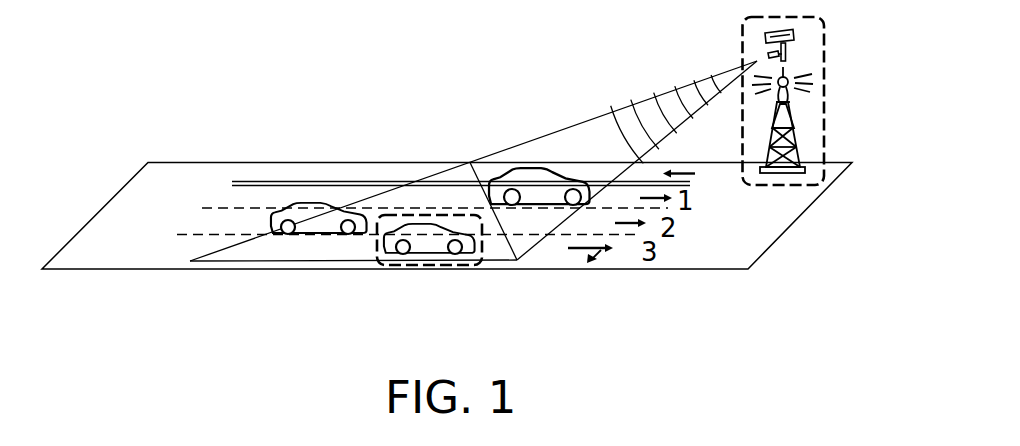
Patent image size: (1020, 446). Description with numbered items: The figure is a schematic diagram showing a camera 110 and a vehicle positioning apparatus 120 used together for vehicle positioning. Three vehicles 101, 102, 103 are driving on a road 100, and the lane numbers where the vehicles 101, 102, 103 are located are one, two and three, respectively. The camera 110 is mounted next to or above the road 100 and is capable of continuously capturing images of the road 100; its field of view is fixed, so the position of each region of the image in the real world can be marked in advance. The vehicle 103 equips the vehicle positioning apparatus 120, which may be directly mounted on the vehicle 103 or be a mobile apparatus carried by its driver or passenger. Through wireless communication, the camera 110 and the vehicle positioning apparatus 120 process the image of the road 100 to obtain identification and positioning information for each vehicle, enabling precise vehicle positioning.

The road 100 is at (158, 136).
The vehicle 101 is at (535, 167).
The vehicle 102 is at (313, 201).
The vehicle 103 is at (393, 253).
The camera 110 is at (826, 50).
The vehicle positioning apparatus 120 is at (448, 264).